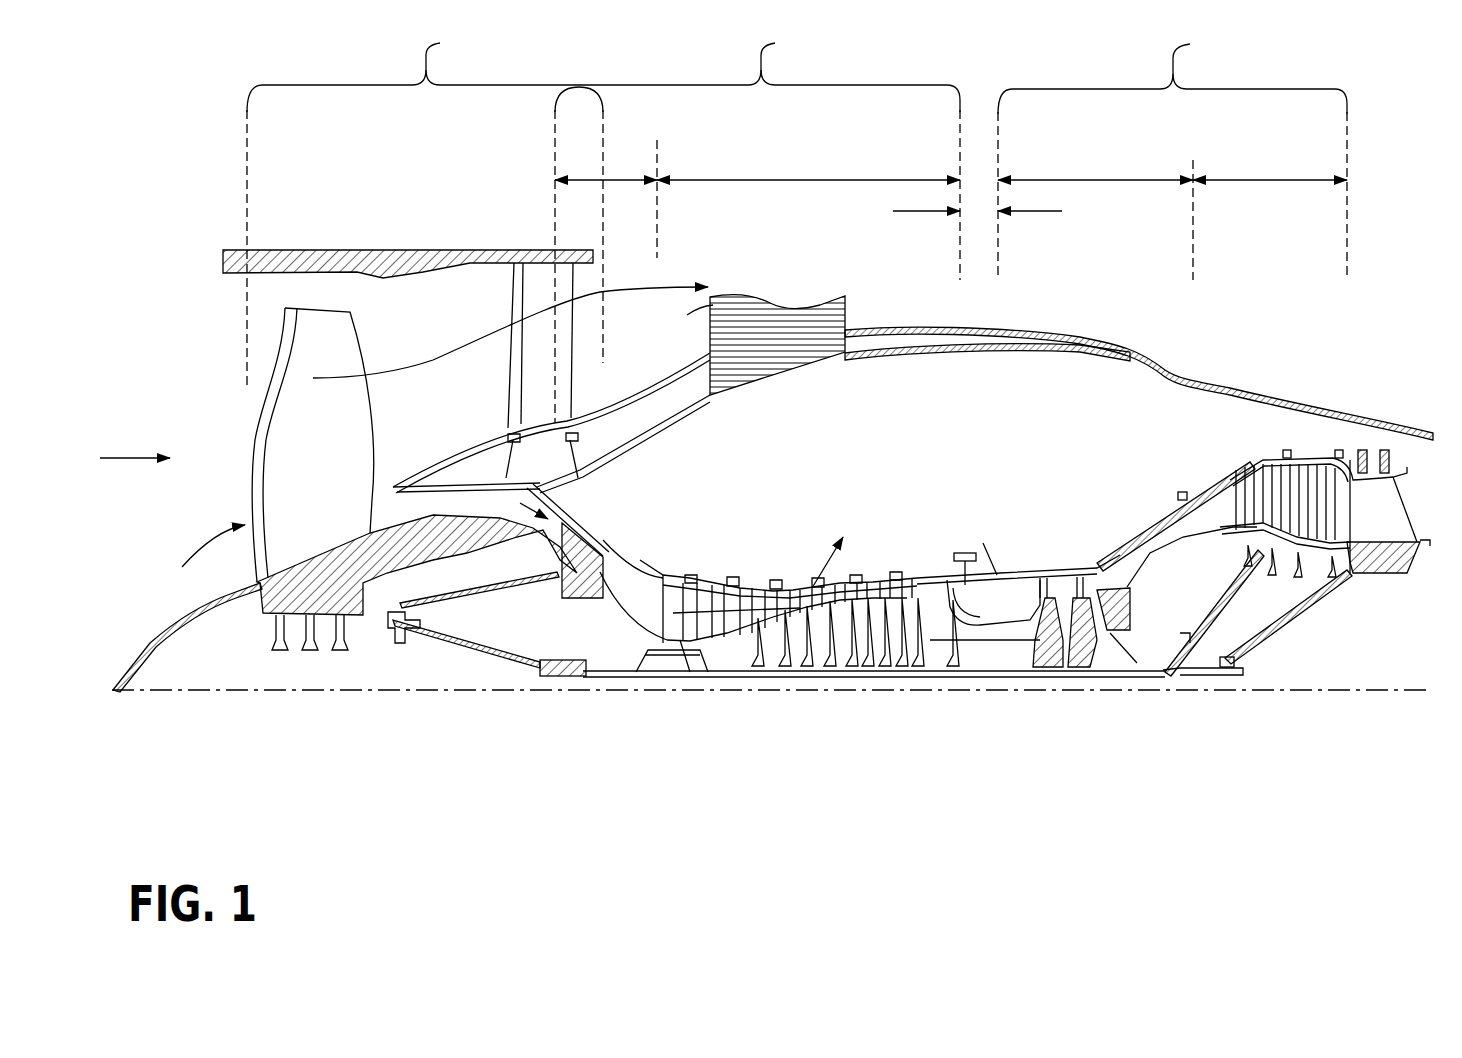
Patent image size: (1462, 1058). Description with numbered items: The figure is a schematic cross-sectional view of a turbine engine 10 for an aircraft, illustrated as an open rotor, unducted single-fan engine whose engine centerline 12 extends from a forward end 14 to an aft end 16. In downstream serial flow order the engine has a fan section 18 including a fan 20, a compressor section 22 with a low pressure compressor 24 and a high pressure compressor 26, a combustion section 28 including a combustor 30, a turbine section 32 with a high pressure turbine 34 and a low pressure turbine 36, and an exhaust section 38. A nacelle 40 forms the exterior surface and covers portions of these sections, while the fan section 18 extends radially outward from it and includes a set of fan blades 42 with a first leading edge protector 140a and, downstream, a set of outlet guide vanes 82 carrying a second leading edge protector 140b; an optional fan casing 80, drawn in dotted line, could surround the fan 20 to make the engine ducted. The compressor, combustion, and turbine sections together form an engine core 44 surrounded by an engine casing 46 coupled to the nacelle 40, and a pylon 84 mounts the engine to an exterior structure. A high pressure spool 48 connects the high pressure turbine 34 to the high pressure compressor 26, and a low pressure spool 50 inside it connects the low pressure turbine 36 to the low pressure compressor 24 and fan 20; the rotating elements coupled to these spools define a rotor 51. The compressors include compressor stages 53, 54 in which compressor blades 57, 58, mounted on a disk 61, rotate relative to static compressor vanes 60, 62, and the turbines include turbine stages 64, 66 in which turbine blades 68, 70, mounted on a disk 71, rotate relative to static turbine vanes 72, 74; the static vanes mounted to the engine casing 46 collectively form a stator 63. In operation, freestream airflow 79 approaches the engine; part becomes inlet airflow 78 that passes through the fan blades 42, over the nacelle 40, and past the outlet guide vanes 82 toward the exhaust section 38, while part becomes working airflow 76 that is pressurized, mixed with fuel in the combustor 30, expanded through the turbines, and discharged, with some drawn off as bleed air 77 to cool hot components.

The turbine engine 10 is at (1361, 208).
The engine centerline 12 is at (240, 693).
The forward end 14 is at (147, 405).
The aft end 16 is at (1447, 512).
The fan section 18 is at (497, 207).
The fan 20 is at (204, 561).
The compressor section 22 is at (757, 227).
The low pressure compressor 24 is at (592, 180).
The high pressure compressor 26 is at (795, 180).
The combustion section 28 is at (908, 212).
The combustor 30 is at (1000, 585).
The turbine section 32 is at (1172, 155).
The high pressure turbine 34 is at (1095, 180).
The low pressure turbine 36 is at (1268, 180).
The exhaust section 38 is at (1425, 487).
The nacelle 40 is at (1230, 388).
The set of fan blades 42 is at (333, 355).
The engine core 44 is at (925, 458).
The engine casing 46 is at (1178, 495).
The high pressure spool 48 is at (960, 643).
The low pressure spool 50 is at (560, 677).
The rotor 51 is at (1137, 630).
The compressor stage 53 is at (551, 475).
The compressor stage 54 is at (790, 572).
The compressor blade 57 is at (580, 535).
The compressor blade 58 is at (727, 580).
The static compressor vane 60 is at (573, 523).
The disk 61 is at (455, 528).
The static compressor vane 62 is at (700, 580).
The stator 63 is at (695, 677).
The turbine stage 64 is at (1069, 568).
The turbine stage 66 is at (1273, 392).
The turbine blade 68 is at (1057, 560).
The turbine blade 70 is at (1333, 468).
The disk 71 is at (1243, 530).
The static turbine vane 72 is at (1042, 560).
The static turbine vane 74 is at (1318, 470).
The working airflow 76 is at (527, 513).
The bleed air 77 is at (835, 583).
The inlet airflow 78 is at (511, 325).
The freestream airflow 79 is at (135, 462).
The fan casing 80 is at (318, 250).
The set of outlet guide vanes 82 is at (515, 362).
The pylon 84 is at (778, 298).
The first leading edge protector 140a is at (275, 396).
The second leading edge protector 140b is at (517, 283).